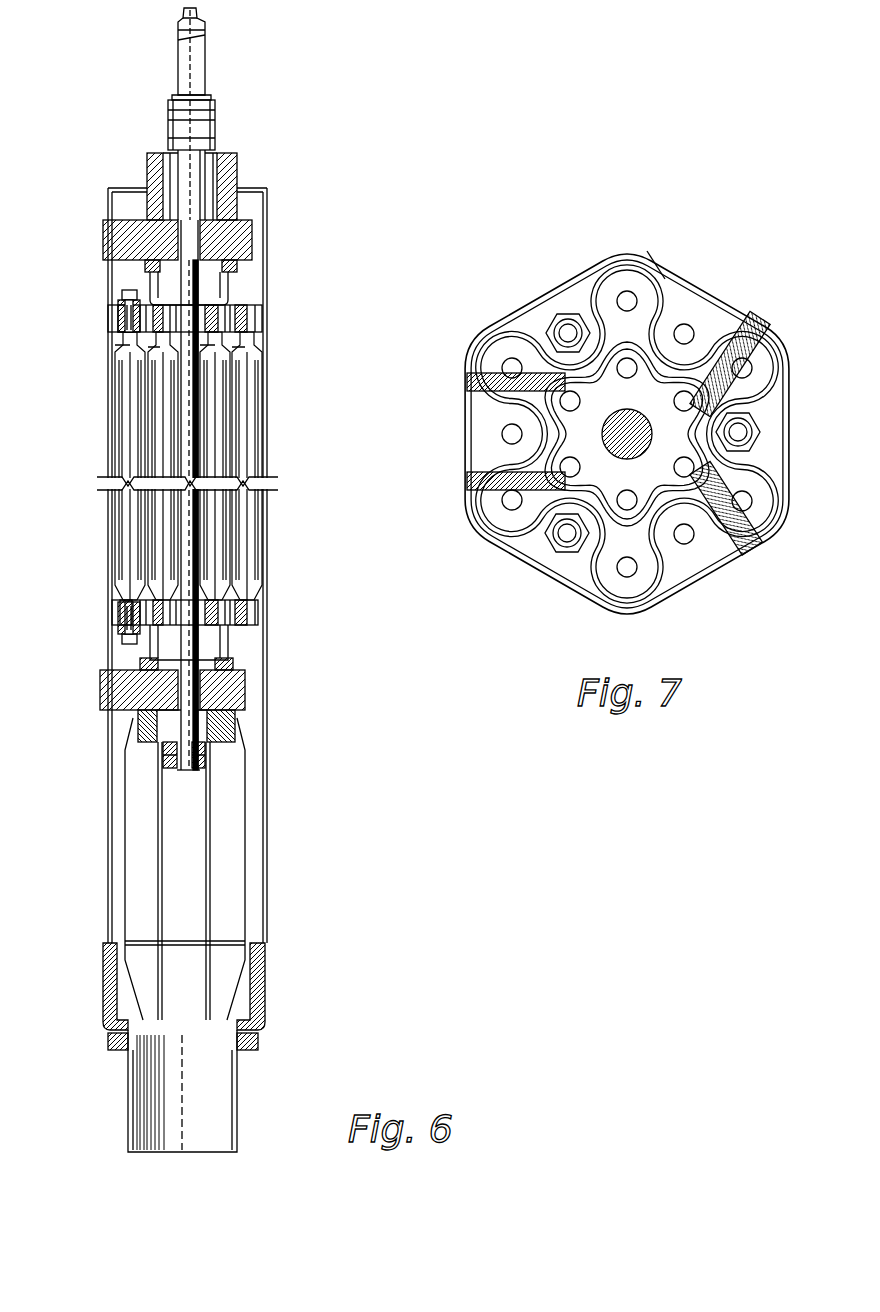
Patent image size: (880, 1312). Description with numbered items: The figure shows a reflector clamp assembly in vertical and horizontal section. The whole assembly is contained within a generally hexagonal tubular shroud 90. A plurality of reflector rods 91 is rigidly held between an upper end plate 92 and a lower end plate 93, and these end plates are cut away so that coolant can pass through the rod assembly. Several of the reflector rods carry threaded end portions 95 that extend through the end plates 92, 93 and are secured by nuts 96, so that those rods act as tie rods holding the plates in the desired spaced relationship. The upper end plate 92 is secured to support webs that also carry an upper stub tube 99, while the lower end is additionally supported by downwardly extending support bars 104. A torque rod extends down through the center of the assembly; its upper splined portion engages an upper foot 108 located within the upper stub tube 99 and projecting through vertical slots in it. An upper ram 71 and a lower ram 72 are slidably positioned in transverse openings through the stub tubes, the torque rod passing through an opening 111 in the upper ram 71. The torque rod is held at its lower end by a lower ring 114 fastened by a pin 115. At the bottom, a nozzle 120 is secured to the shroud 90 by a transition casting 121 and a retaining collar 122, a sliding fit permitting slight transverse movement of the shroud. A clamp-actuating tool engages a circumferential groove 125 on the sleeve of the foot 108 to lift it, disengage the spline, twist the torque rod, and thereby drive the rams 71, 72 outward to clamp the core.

In FIG. 6, the upper ram 71 is at (103, 243).
In FIG. 6, the lower ram 72 is at (244, 690).
In FIG. 6, the hexagonal tubular shroud 90 is at (270, 437).
In FIG. 7, the hexagonal tubular shroud 90 is at (790, 410).
In FIG. 6, the reflector rods 91 is at (262, 565).
In FIG. 6, the upper end plate 92 is at (230, 305).
In FIG. 7, the upper end plate 92 is at (668, 397).
In FIG. 6, the lower end plate 93 is at (120, 607).
In FIG. 6, the threaded end portions 95 is at (124, 291).
In FIG. 7, the threaded end portions 95 is at (557, 533).
In FIG. 6, the nuts 96 is at (120, 307).
In FIG. 7, the nuts 96 is at (563, 552).
In FIG. 6, the upper stub tube 99 is at (147, 168).
In FIG. 6, the support bars 104 is at (125, 863).
In FIG. 6, the upper foot 108 is at (195, 192).
In FIG. 6, the opening 111 is at (208, 231).
In FIG. 6, the lower ring 114 is at (201, 770).
In FIG. 6, the pin 115 is at (162, 768).
In FIG. 6, the nozzle 120 is at (128, 1119).
In FIG. 6, the transition casting 121 is at (262, 1022).
In FIG. 6, the retaining collar 122 is at (109, 1049).
In FIG. 6, the circumferential groove 125 is at (213, 118).